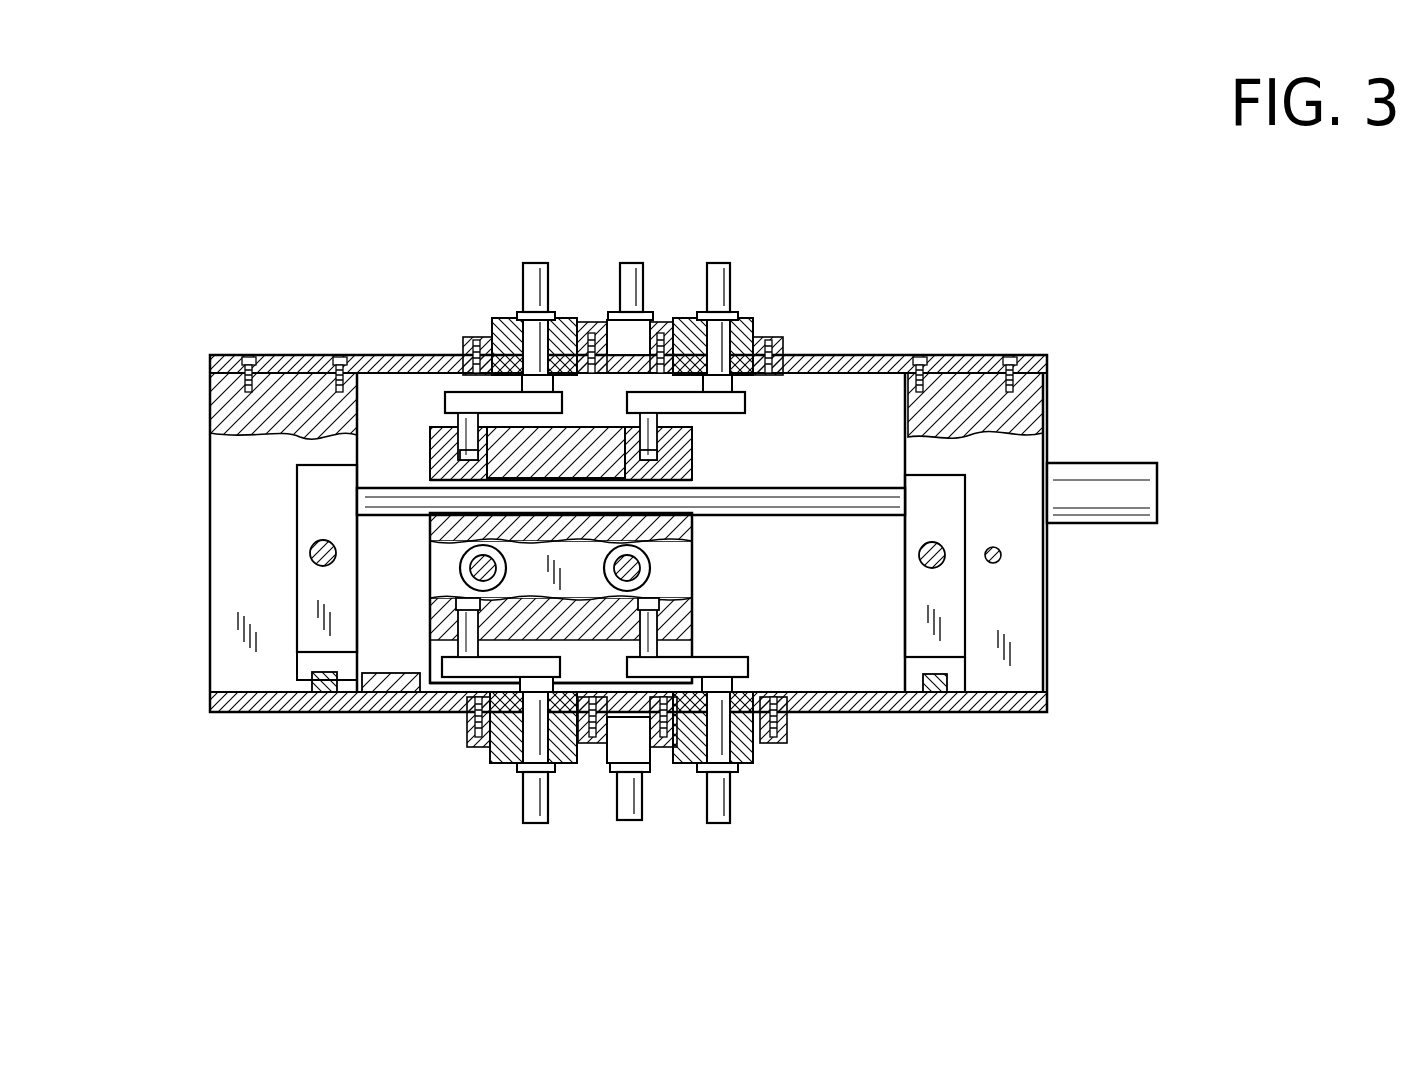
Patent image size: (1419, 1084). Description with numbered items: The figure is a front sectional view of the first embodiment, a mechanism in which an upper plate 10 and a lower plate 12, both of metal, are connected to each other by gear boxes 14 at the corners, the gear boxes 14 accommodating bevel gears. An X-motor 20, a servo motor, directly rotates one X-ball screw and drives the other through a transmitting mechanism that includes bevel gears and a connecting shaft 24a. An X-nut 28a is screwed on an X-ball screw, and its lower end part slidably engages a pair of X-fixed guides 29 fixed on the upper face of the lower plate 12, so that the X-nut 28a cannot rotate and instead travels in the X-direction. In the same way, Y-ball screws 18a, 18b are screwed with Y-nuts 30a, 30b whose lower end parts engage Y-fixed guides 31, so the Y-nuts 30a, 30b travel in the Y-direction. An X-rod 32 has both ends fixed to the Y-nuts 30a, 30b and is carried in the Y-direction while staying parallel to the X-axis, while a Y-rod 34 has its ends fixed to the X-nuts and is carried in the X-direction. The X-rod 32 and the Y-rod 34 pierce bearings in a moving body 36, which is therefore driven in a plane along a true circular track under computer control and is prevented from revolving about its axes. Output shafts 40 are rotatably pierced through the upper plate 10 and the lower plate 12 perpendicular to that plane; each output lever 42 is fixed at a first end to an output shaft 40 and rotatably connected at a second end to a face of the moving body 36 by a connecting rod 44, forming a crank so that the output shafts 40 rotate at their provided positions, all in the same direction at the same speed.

The upper plate 10 is at (962, 360).
The lower plate 12 is at (1020, 712).
The gear boxes 14 is at (240, 478).
The Y-ball screw 18a is at (943, 565).
The Y-ball screw 18b is at (313, 557).
The X-motor 20 is at (1107, 490).
The connecting shaft 24a is at (1003, 555).
The X-nut 28a is at (440, 662).
The X-fixed guides 29 is at (878, 692).
The Y-nut 30a is at (967, 483).
The Y-nut 30b is at (317, 437).
The Y-fixed guides 31 is at (320, 690).
The X-rod 32 is at (848, 495).
The Y-rod 34 is at (655, 569).
The moving body 36 is at (697, 617).
The output shafts 40 is at (540, 262).
The output lever 42 is at (453, 400).
The connecting rod 44 is at (463, 420).